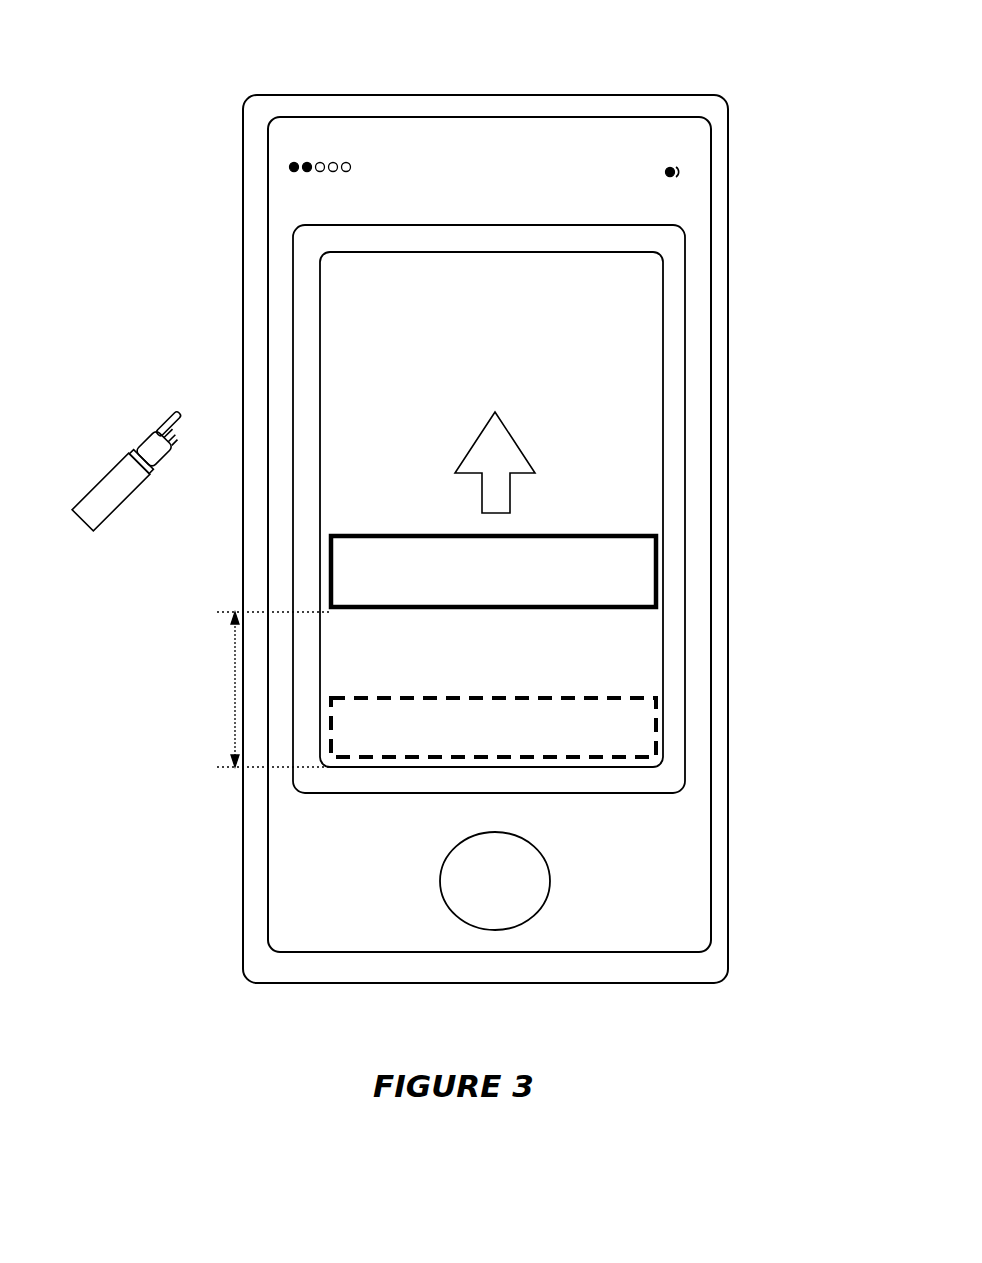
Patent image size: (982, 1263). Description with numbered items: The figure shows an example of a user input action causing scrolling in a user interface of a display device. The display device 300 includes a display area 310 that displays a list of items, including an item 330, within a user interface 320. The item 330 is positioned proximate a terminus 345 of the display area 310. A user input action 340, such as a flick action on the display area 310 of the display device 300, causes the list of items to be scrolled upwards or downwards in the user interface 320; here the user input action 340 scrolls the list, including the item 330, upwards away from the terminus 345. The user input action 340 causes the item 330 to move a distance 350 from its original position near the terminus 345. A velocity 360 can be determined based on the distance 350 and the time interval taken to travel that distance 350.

The display device 300 is at (612, 52).
The display area 310 is at (410, 252).
The user interface 320 is at (545, 300).
The item 330 is at (493, 646).
The user input action 340 is at (73, 512).
The terminus 345 is at (233, 763).
The distance 350 is at (232, 688).
The velocity 360 is at (512, 440).